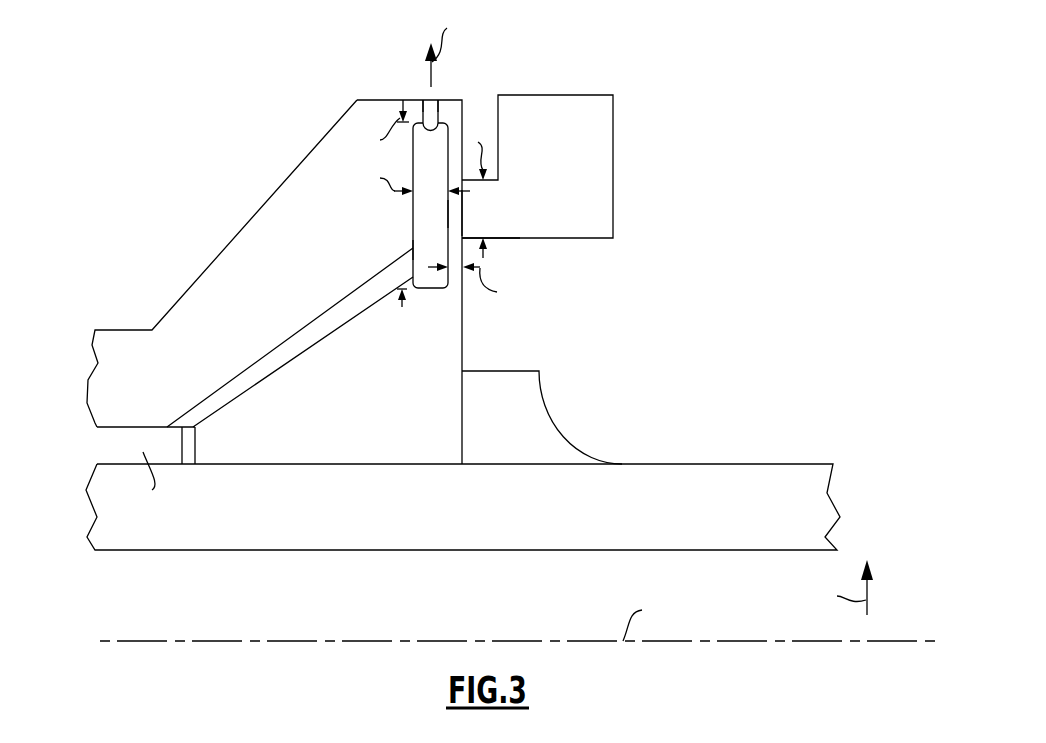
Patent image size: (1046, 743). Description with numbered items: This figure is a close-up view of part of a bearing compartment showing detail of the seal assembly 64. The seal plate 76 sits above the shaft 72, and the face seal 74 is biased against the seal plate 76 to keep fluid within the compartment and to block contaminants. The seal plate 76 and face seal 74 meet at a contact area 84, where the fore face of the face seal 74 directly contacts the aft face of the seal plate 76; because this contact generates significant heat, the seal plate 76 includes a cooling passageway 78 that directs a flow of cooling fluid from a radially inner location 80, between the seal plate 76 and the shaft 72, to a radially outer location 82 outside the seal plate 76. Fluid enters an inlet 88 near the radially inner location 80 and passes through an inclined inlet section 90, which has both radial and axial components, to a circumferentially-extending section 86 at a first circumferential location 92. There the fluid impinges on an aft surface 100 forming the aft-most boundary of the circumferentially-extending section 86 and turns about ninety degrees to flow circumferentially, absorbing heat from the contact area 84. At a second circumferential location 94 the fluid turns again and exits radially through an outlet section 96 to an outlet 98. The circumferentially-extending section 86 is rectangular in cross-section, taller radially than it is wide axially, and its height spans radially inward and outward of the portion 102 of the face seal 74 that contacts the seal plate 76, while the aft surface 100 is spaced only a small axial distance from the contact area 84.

The seal assembly 64 is at (306, 113).
The shaft 72 is at (769, 519).
The face seal 74 is at (572, 154).
The seal plate 76 is at (281, 301).
The cooling passageway 78 is at (356, 270).
The radially inner location 80 is at (160, 436).
The radially outer location 82 is at (424, 86).
The contact area 84 is at (463, 214).
The circumferentially-extending section 86 is at (425, 202).
The inlet 88 is at (183, 432).
The inlet section 90 is at (256, 373).
The first circumferential location 92 is at (415, 253).
The second circumferential location 94 is at (441, 124).
The outlet section 96 is at (426, 109).
The outlet 98 is at (438, 103).
The aft surface 100 is at (443, 214).
The portion of the face seal 102 is at (488, 223).